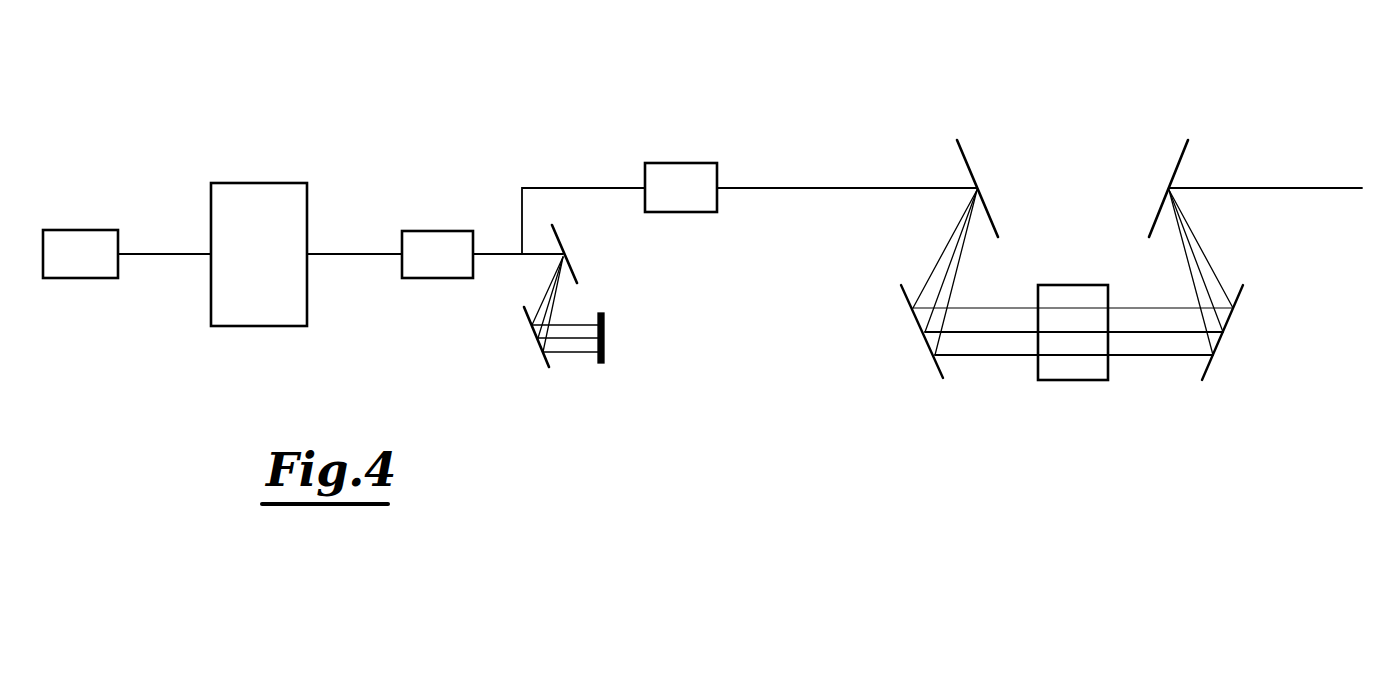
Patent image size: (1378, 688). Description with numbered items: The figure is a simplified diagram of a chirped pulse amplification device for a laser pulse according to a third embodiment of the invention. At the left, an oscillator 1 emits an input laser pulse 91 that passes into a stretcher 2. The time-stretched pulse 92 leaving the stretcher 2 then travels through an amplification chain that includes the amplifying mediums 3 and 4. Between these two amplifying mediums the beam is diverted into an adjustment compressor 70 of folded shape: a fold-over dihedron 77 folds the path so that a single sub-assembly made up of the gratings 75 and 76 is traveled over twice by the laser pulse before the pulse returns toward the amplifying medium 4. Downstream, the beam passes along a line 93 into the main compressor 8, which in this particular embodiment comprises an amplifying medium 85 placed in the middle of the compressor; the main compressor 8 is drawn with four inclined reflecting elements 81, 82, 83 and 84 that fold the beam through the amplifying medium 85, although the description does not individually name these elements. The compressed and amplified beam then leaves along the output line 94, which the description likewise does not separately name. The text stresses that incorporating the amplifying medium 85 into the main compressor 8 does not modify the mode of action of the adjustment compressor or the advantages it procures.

The oscillator 1 is at (79, 240).
The stretcher 2 is at (266, 208).
The amplifying medium 3 is at (436, 243).
The amplifying medium 4 is at (679, 178).
The main compressor 8 is at (1075, 142).
The adjustment compressor 70 is at (559, 355).
The grating 75 is at (583, 277).
The grating 76 is at (541, 354).
The fold-over dihedron 77 is at (600, 366).
The mirror 81 is at (959, 141).
The mirror 82 is at (903, 283).
The mirror 83 is at (1243, 283).
The mirror 84 is at (1183, 141).
The amplifying medium 85 is at (1074, 380).
The input laser pulse 91 is at (164, 253).
The time-stretched pulse 92 is at (347, 253).
The beam 93 is at (900, 186).
The output beam 94 is at (1263, 186).